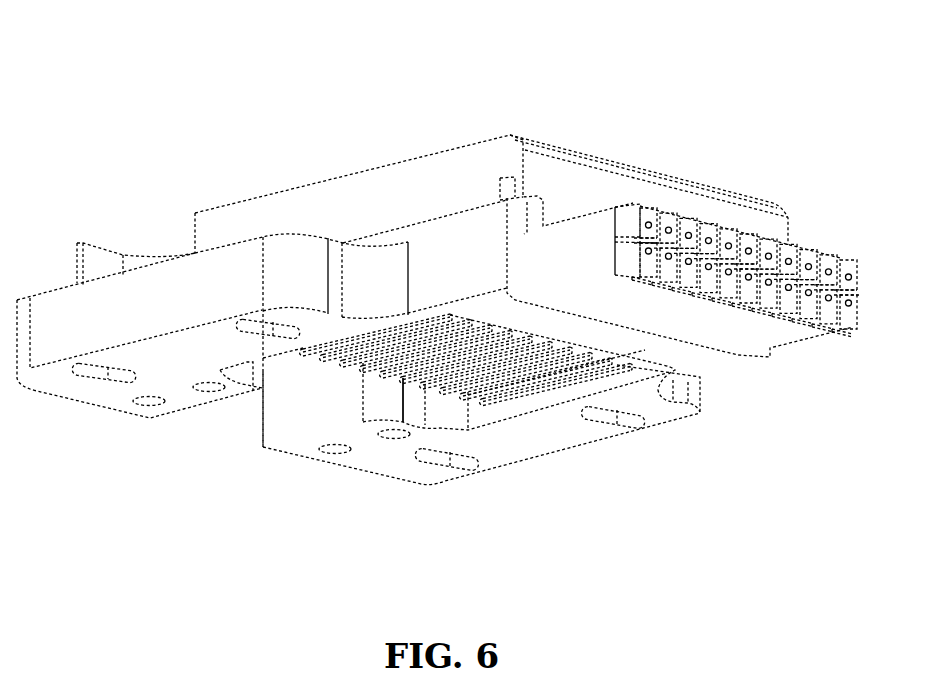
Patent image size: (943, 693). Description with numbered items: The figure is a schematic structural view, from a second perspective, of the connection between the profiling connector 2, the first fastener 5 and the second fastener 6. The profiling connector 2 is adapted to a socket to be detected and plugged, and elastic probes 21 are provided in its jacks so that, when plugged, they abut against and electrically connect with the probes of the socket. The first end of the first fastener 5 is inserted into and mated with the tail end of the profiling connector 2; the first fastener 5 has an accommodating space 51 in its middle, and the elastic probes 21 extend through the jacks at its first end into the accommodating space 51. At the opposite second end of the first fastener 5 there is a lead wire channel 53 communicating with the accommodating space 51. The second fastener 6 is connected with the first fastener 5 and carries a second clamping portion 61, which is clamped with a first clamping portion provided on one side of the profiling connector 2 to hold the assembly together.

The profiling connector 2 is at (588, 243).
The elastic probe 21 is at (550, 365).
The first fastener 5 is at (498, 450).
The accommodating space 51 is at (435, 390).
The lead wire channel 53 is at (293, 380).
The second fastener 6 is at (385, 200).
The second clamping portion 61 is at (497, 185).